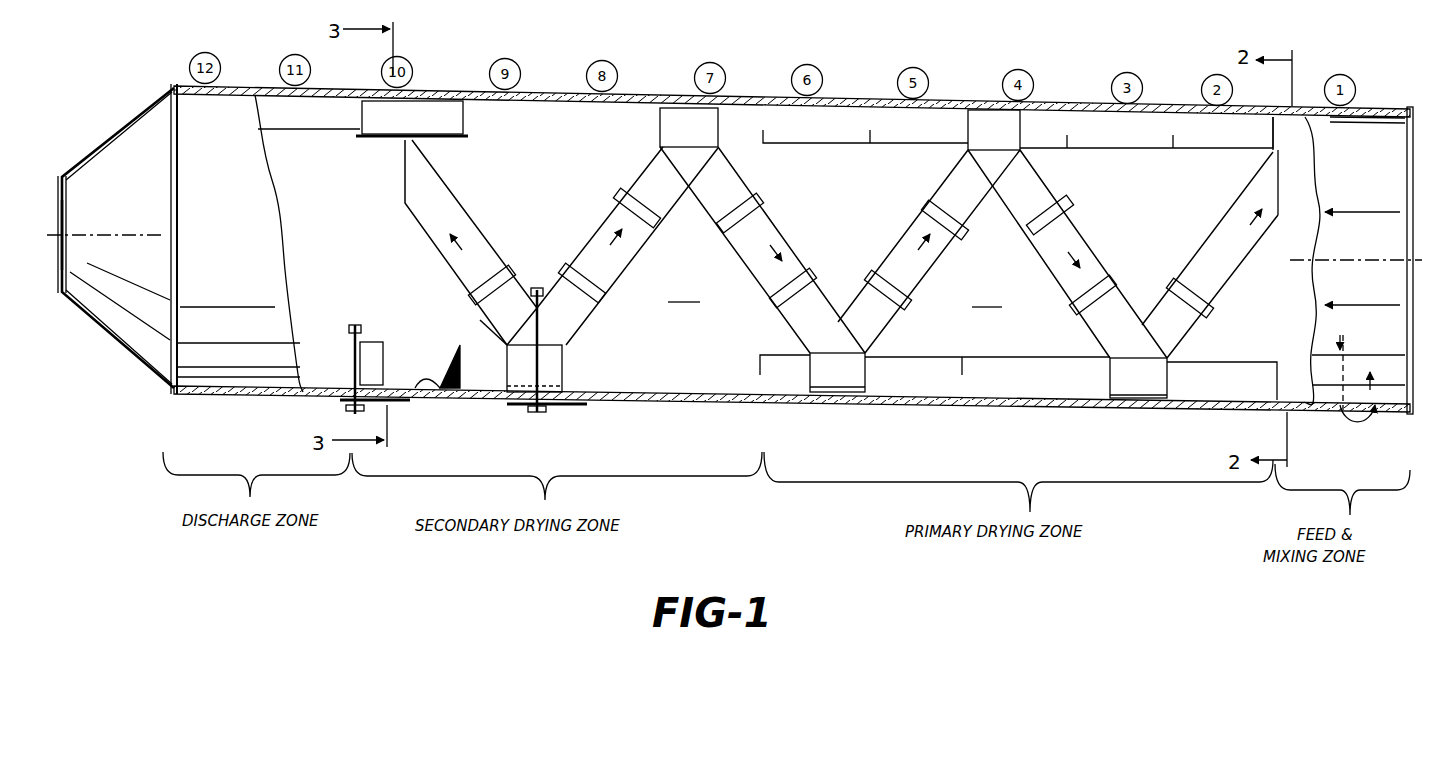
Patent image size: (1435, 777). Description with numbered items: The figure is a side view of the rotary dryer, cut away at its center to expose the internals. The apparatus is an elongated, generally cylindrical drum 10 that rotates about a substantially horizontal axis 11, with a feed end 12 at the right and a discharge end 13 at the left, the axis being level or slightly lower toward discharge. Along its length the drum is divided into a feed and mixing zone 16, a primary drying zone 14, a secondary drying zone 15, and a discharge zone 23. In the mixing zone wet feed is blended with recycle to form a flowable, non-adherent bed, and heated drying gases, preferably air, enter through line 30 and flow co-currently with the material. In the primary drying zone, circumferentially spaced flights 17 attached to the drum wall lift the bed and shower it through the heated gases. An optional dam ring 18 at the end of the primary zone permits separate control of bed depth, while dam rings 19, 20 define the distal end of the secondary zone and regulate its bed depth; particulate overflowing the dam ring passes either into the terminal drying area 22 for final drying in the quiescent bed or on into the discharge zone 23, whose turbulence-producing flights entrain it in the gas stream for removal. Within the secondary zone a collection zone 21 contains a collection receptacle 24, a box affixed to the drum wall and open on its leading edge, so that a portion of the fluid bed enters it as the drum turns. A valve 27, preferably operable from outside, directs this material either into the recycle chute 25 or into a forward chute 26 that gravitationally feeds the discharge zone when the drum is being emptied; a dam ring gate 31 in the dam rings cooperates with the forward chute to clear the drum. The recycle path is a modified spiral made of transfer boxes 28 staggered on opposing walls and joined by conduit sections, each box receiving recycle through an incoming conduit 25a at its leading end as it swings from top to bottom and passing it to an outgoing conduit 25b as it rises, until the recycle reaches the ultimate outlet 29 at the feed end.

The elongated drum 10 is at (1060, 406).
The horizontal axis 11 is at (72, 247).
The feed end 12 is at (1410, 160).
The discharge end 13 is at (62, 175).
The primary drying zone 14 is at (987, 297).
The secondary drying zone 15 is at (684, 292).
The feed and mixing zone 16 is at (1355, 122).
The flights 17 is at (887, 385).
The dam ring 18 is at (762, 380).
The dam ring 19 is at (466, 389).
The dam ring 20 is at (345, 381).
The collection zone 21 is at (540, 413).
The terminal drying area 22 is at (422, 378).
The discharge zone 23 is at (232, 268).
The collection receptacle 24 is at (565, 364).
The recycle chute 25 is at (603, 290).
The incoming conduit 25a is at (776, 328).
The outgoing conduit 25b is at (890, 327).
The forward chute 26 is at (497, 325).
The valve 27 is at (521, 407).
The transfer boxes 28 is at (990, 135).
The ultimate outlet 29 is at (1283, 183).
The line 30 is at (1356, 325).
The dam ring gate 31 is at (380, 356).